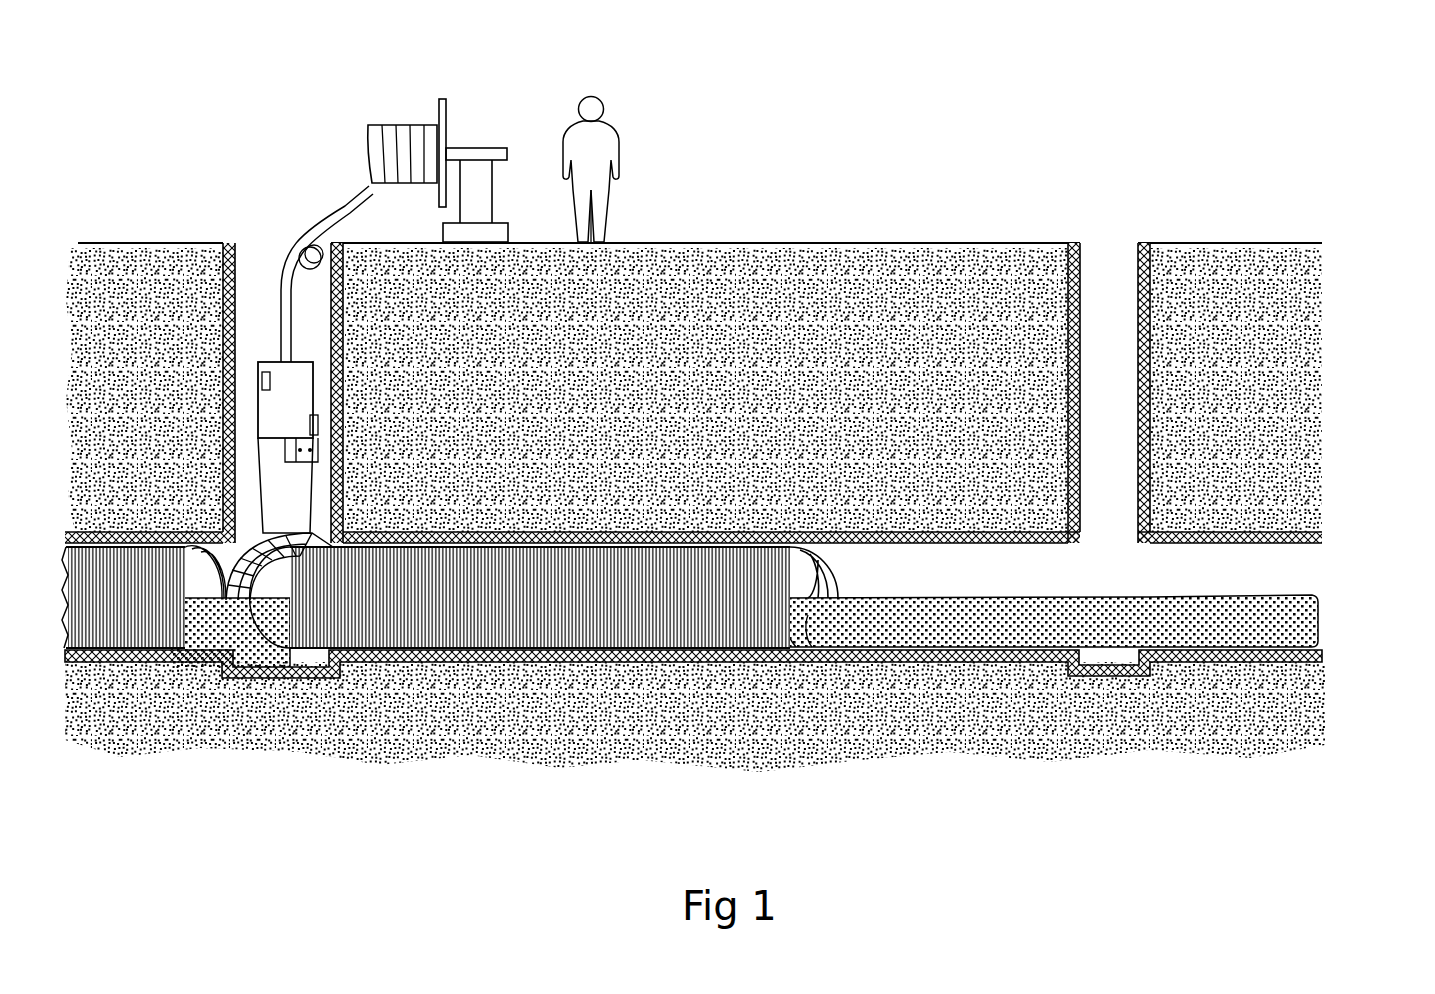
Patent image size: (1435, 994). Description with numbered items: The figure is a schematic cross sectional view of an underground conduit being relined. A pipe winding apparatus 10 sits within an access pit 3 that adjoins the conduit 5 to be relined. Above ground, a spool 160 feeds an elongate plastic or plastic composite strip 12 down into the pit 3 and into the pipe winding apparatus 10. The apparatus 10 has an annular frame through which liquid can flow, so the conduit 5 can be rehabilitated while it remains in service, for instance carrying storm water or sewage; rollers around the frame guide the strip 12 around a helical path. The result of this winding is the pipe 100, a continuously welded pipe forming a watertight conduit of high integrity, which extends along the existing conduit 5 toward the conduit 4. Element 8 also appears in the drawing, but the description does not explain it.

The spool 160 is at (412, 143).
The access pit 3 is at (263, 296).
The elongate plastic or plastic composite strip 12 is at (290, 228).
The pipe winding apparatus 10 is at (302, 400).
The pipe 100 is at (543, 600).
The liner pipe 8 is at (815, 615).
The conduit 5 is at (917, 543).
The conduit 4 is at (1340, 598).